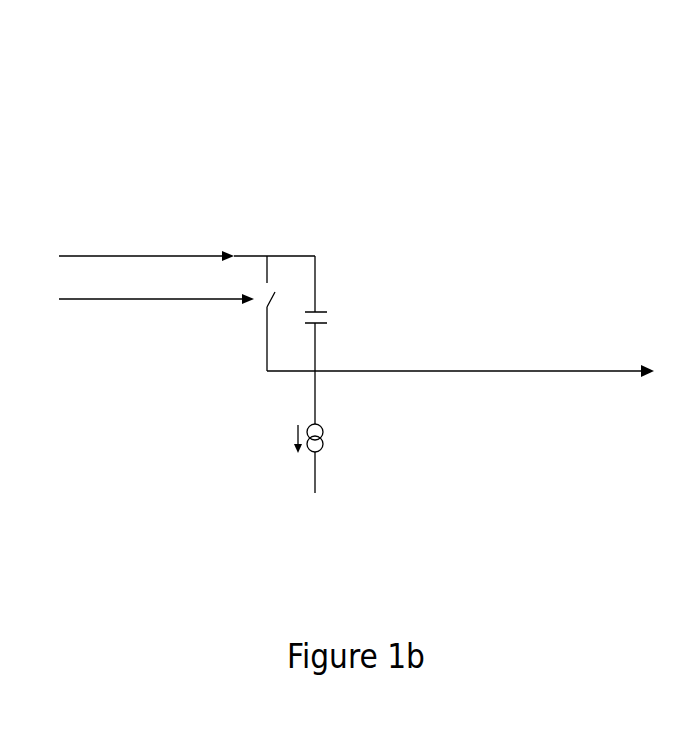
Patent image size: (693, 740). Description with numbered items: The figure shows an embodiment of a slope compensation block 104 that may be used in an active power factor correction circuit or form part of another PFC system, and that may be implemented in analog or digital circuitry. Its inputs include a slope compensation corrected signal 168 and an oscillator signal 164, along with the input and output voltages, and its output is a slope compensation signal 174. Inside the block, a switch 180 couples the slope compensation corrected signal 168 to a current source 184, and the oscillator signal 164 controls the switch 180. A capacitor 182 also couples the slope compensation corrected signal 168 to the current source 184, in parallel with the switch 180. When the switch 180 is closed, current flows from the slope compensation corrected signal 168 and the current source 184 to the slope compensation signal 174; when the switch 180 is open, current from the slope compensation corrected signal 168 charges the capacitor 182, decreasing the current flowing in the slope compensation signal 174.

The slope compensation block 104 is at (248, 165).
The oscillator signal 164 is at (103, 300).
The slope compensation corrected signal 168 is at (307, 253).
The slope compensation signal 174 is at (485, 373).
The switch 180 is at (250, 312).
The capacitor 182 is at (330, 312).
The current source 184 is at (325, 437).